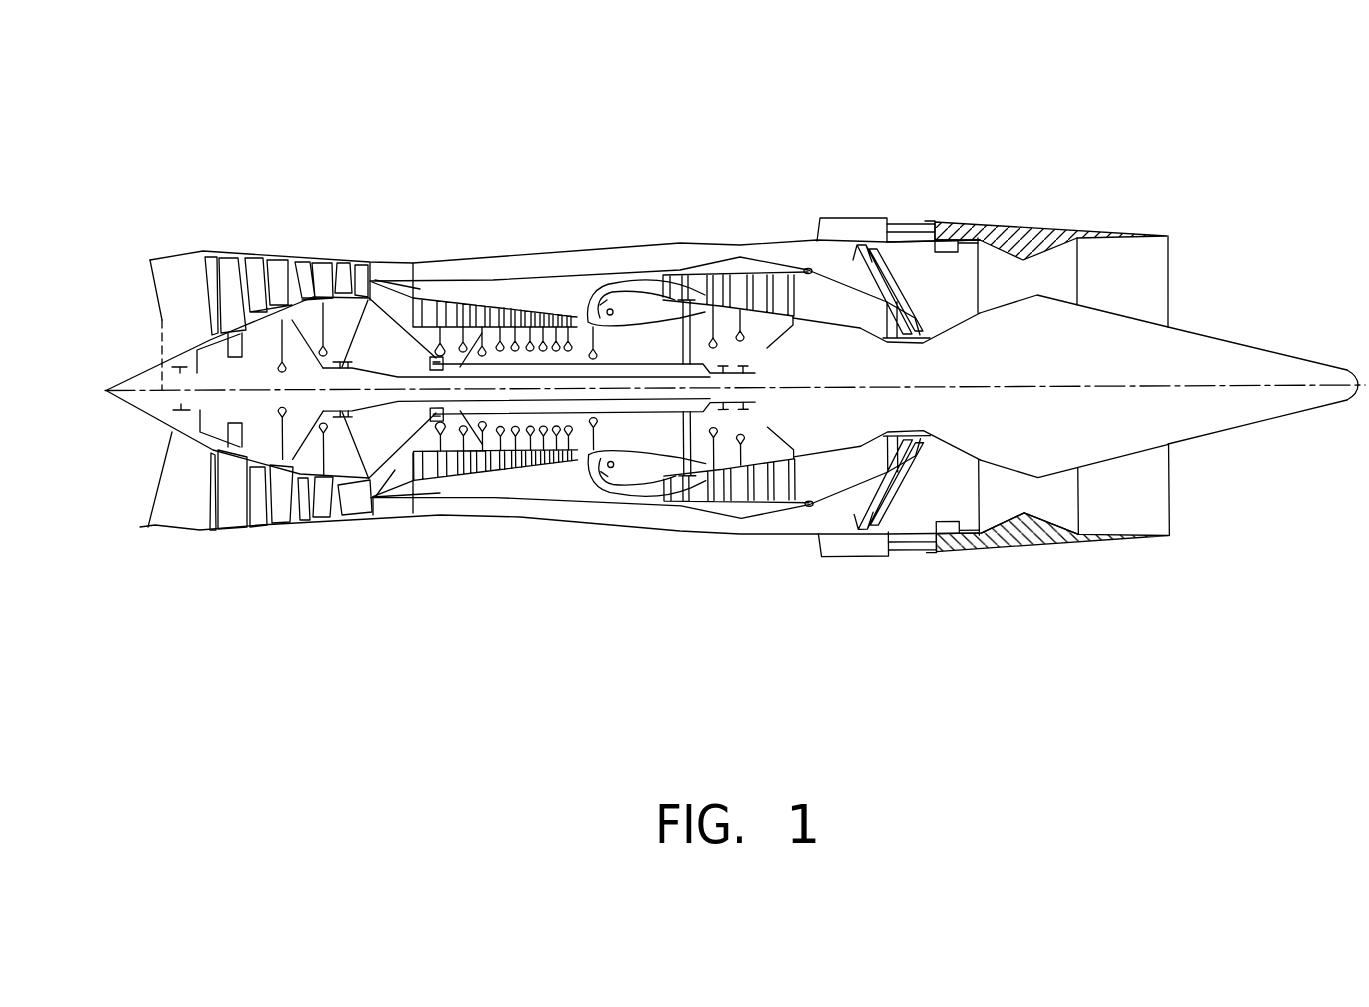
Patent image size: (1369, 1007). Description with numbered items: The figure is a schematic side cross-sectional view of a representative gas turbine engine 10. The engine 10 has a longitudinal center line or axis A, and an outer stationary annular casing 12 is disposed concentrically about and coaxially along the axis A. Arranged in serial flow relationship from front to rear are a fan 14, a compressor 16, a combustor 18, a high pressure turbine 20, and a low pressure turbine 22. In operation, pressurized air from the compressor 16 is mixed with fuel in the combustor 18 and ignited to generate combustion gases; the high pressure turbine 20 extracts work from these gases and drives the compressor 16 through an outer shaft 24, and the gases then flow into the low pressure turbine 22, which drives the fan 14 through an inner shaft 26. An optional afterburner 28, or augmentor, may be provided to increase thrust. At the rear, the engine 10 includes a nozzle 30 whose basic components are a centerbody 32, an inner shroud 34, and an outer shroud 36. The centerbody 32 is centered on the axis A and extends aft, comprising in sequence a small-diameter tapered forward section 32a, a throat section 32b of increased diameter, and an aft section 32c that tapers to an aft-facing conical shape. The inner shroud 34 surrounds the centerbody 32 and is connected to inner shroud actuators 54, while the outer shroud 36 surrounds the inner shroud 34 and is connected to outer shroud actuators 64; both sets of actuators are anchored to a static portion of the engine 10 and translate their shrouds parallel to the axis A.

The gas turbine engine 10 is at (700, 95).
The outer stationary annular casing 12 is at (445, 259).
The fan 14 is at (280, 266).
The compressor 16 is at (495, 308).
The combustor 18 is at (630, 282).
The high pressure turbine 20 is at (677, 482).
The low pressure turbine 22 is at (745, 492).
The outer shaft 24 is at (607, 453).
The inner shaft 26 is at (397, 473).
The afterburner 28 is at (890, 275).
The nozzle 30 is at (1143, 182).
The centerbody 32 is at (1290, 367).
The tapered forward section 32a is at (932, 330).
The throat section 32b is at (1040, 293).
The aft section 32c is at (1193, 341).
The inner shroud 34 is at (1040, 513).
The outer shroud 36 is at (1000, 552).
The inner shroud actuators 54 is at (963, 222).
The outer shroud actuators 64 is at (848, 226).
The longitudinal center line or axis A is at (160, 320).